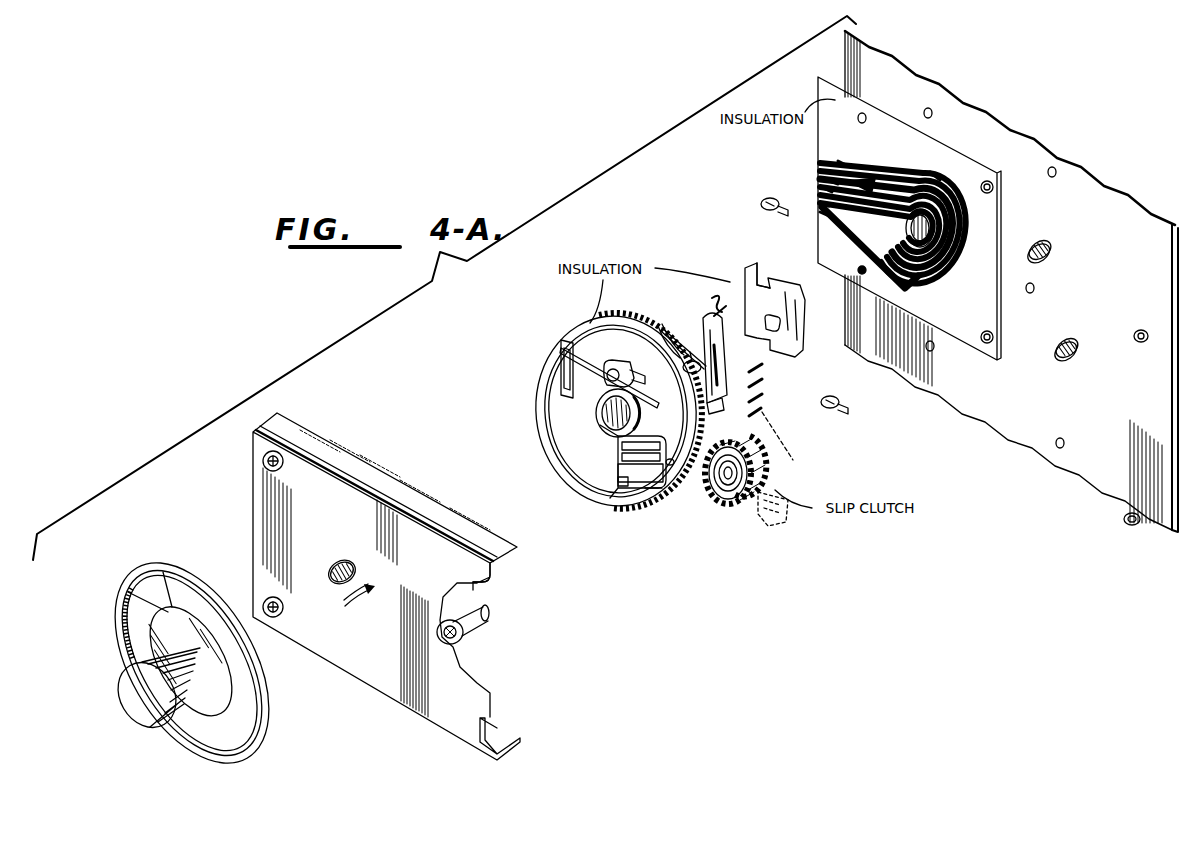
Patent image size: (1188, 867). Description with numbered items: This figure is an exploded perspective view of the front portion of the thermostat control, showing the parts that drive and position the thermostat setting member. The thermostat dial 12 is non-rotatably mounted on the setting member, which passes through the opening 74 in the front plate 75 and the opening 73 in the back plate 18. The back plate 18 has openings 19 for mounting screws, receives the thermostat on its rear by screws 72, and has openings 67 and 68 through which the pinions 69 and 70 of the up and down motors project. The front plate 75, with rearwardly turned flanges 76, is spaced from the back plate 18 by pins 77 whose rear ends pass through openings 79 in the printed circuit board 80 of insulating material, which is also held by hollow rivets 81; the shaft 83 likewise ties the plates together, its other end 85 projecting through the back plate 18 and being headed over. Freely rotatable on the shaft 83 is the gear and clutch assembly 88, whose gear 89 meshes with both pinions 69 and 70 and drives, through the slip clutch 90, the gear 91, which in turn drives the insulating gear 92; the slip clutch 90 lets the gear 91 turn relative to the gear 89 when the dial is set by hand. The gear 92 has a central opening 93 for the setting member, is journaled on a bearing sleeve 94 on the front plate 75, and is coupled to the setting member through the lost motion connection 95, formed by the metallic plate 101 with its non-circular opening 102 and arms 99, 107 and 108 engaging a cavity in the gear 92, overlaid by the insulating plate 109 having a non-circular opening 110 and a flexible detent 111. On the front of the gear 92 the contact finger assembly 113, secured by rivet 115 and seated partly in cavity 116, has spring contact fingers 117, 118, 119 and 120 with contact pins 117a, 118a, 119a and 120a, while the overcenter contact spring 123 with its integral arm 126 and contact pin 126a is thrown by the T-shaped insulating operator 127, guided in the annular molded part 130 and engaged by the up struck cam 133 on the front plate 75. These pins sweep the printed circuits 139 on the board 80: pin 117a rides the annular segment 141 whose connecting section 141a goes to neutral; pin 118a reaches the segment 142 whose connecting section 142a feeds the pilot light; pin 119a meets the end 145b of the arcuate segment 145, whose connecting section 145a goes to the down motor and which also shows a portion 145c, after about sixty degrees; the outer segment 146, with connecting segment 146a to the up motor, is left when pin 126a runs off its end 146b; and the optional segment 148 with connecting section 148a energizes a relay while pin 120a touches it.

The thermostat dial 12 is at (262, 733).
The back plate 18 is at (1123, 205).
The openings 19 is at (1133, 526).
The opening 67 is at (1051, 246).
The opening 68 is at (1079, 349).
The pinion 69 is at (791, 452).
The pinion 70 is at (776, 530).
The screws 72 is at (770, 204).
The opening 73 is at (936, 225).
The opening 74 is at (356, 572).
The front plate 75 is at (492, 575).
The rearwardly turned flanges 76 is at (383, 470).
The pins 77 is at (283, 469).
The openings 79 is at (865, 114).
The printed circuit board 80 is at (975, 350).
The hollow rivets 81 is at (994, 187).
The shaft 83 is at (463, 636).
The other end of shaft 85 is at (490, 612).
The gear and clutch assembly 88 is at (720, 503).
The gear 89 is at (720, 440).
The slip clutch 90 is at (745, 503).
The gear 91 is at (732, 503).
The gear 92 is at (545, 355).
The central opening 93 is at (597, 408).
The bearing sleeve 94 is at (344, 563).
The lost motion driving connection 95 is at (694, 274).
The arm 99 is at (724, 368).
The metallic plate 101 is at (692, 358).
The non-circular central opening 102 is at (694, 360).
The arm 107 is at (724, 399).
The arm 108 is at (662, 330).
The plate of insulating material 109 is at (782, 296).
The non-circular opening 110 is at (772, 331).
The flexible detent 111 is at (762, 275).
The contact finger assembly 113 is at (655, 491).
The rivet 115 is at (670, 462).
The cavity 116 is at (620, 482).
The spring contact finger 117 is at (622, 446).
The spring contact finger 118 is at (622, 457).
The spring contact finger 119 is at (620, 473).
The spring contact finger 120 is at (626, 490).
The contact pin 117a is at (763, 366).
The contact pin 118a is at (763, 381).
The contact pin 119a is at (763, 396).
The contact pin 120a is at (762, 412).
The overcenter contact spring 123 is at (605, 377).
The integral arm 126 is at (561, 370).
The contact pin 126a is at (716, 300).
The T-shaped insulating operator 127 is at (598, 362).
The annular molded part 130 is at (603, 420).
The up struck cam 133 is at (352, 608).
The printed circuits 139 is at (889, 218).
The annular contact segment 141 is at (945, 235).
The connecting section 141a is at (824, 189).
The annular contact segment 142 is at (960, 258).
The connecting section 142a is at (822, 206).
The arcuate contact segment 145 is at (965, 268).
The connecting section 145a is at (822, 217).
The end of contact segment 145b is at (932, 173).
The conductor pad 145c is at (872, 184).
The arcuate contact segment 146 is at (962, 285).
The connecting segment 146a is at (830, 182).
The end of contact segment 146b is at (917, 293).
The arcuate contact segment 148 is at (905, 175).
The connecting section 148a is at (840, 163).